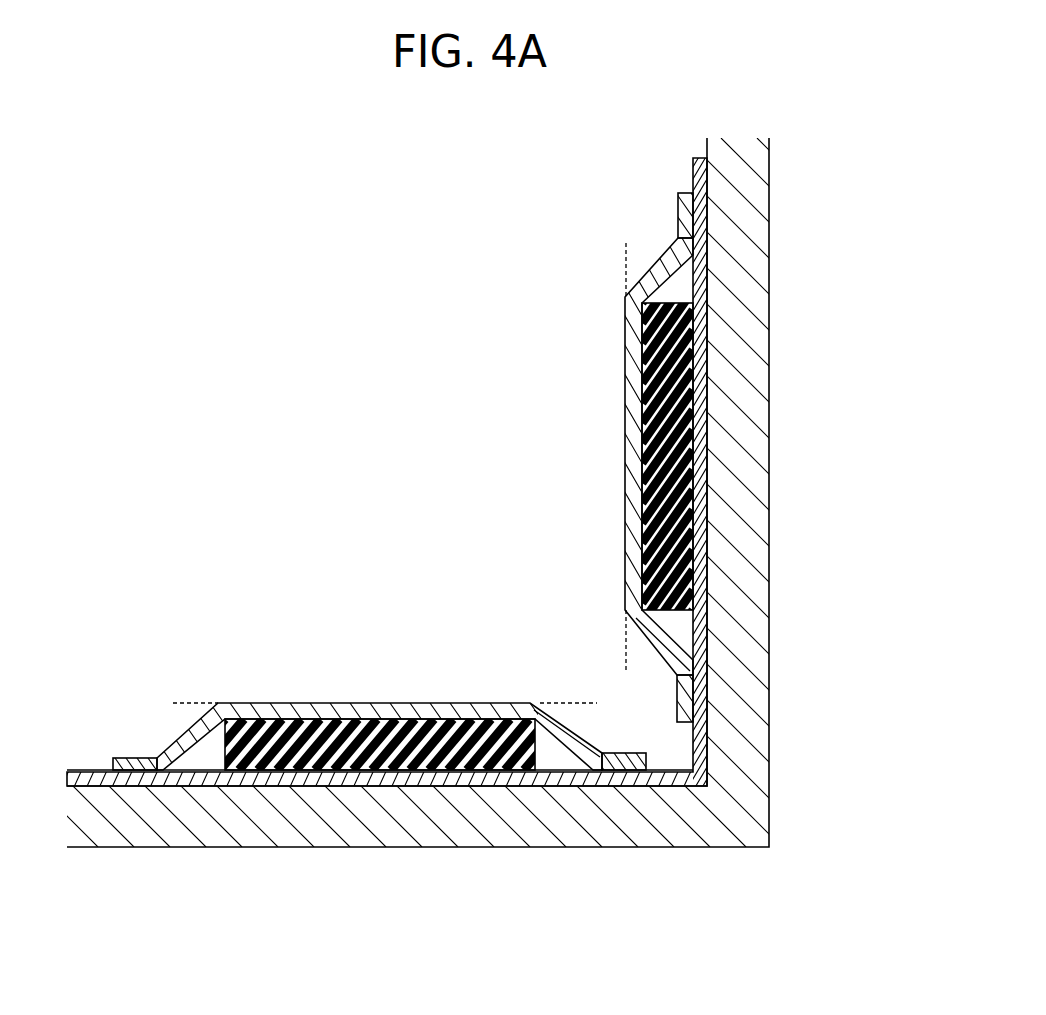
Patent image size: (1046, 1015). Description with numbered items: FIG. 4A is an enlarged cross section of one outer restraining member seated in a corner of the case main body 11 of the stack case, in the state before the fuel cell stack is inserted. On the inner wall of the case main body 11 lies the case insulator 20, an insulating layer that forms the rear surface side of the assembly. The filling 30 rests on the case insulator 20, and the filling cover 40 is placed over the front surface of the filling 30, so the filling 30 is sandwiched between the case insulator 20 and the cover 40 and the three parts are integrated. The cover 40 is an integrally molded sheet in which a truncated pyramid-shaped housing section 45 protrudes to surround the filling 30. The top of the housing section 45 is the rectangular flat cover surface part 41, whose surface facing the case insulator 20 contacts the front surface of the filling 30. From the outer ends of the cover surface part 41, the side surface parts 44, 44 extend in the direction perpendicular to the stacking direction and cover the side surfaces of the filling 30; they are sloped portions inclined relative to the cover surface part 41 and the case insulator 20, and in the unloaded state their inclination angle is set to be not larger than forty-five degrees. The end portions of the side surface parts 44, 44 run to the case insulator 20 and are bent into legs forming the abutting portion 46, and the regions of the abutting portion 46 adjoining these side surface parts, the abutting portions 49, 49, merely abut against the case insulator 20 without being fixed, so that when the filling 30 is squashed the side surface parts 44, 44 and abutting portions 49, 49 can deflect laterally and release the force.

The case main body 11 is at (760, 553).
The case insulator 20 is at (679, 780).
The filling 30 is at (380, 745).
The filling cover 40 is at (467, 793).
The abutting portion 46 is at (682, 693).
The cover surface part 41 is at (386, 706).
The housing section 45 is at (503, 504).
The side surface part 44 is at (655, 275).
The abutting portion 49 is at (688, 212).